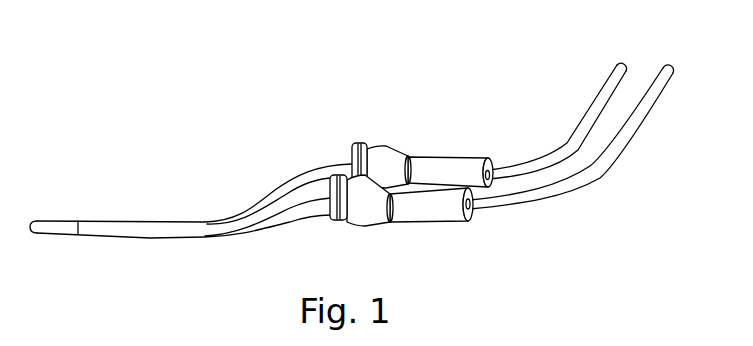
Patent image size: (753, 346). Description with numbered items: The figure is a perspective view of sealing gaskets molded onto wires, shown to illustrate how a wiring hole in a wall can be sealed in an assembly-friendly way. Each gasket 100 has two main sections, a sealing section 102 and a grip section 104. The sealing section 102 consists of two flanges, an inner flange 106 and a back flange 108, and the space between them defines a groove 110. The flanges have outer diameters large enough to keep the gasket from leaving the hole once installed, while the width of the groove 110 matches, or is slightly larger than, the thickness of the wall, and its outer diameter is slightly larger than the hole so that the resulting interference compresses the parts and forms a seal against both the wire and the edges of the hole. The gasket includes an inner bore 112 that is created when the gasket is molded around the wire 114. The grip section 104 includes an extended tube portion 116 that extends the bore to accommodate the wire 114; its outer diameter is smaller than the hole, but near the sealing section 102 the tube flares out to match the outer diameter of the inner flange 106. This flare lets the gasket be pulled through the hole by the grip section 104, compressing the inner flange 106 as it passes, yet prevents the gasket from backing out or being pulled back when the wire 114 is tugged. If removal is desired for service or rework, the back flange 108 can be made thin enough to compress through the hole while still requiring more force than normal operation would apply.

The gasket 100 is at (352, 154).
The sealing section 102 is at (413, 147).
The grip section 104 is at (418, 148).
The inner flange 106 is at (375, 215).
The back flange 108 is at (330, 216).
The groove 110 is at (356, 218).
The inner bore 112 is at (476, 207).
The wire 114 is at (567, 182).
The extended tube portion 116 is at (423, 213).